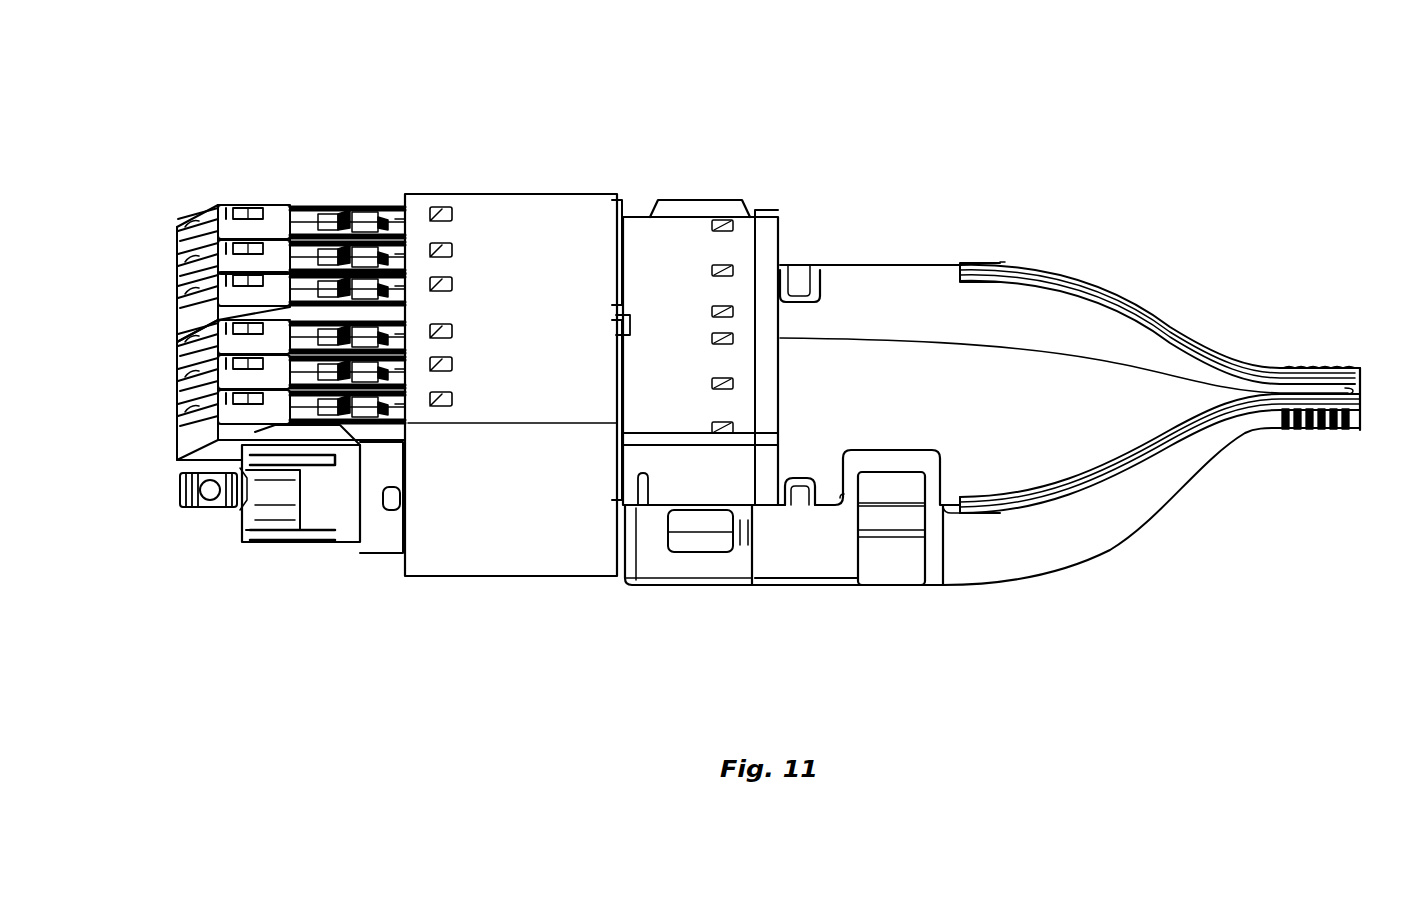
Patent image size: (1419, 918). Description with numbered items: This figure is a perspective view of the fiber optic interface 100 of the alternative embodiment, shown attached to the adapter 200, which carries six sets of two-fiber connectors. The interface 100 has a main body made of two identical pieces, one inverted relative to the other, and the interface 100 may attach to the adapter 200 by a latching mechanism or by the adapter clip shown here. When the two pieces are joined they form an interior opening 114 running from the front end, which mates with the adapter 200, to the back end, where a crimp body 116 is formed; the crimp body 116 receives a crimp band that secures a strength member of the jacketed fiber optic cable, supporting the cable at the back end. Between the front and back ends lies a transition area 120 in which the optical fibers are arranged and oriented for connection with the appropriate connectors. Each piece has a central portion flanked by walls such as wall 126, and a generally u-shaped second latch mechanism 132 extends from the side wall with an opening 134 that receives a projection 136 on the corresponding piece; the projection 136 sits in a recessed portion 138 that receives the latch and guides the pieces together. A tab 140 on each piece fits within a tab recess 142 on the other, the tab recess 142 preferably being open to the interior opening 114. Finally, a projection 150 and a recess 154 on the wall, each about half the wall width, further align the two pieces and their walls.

The interface 100 is at (991, 366).
The adapter 200 is at (524, 178).
The interior opening 114 is at (1007, 308).
The crimp body 116 is at (1323, 430).
The transition area 120 is at (1122, 290).
The wall 126 is at (884, 511).
The second latch mechanism 132 is at (945, 470).
The opening 134 is at (900, 488).
The projection 136 is at (697, 523).
The recessed portion 138 is at (672, 568).
The tab 140 is at (802, 477).
The tab recess 142 is at (798, 268).
The projection 150 is at (1170, 446).
The recess 154 is at (1190, 333).